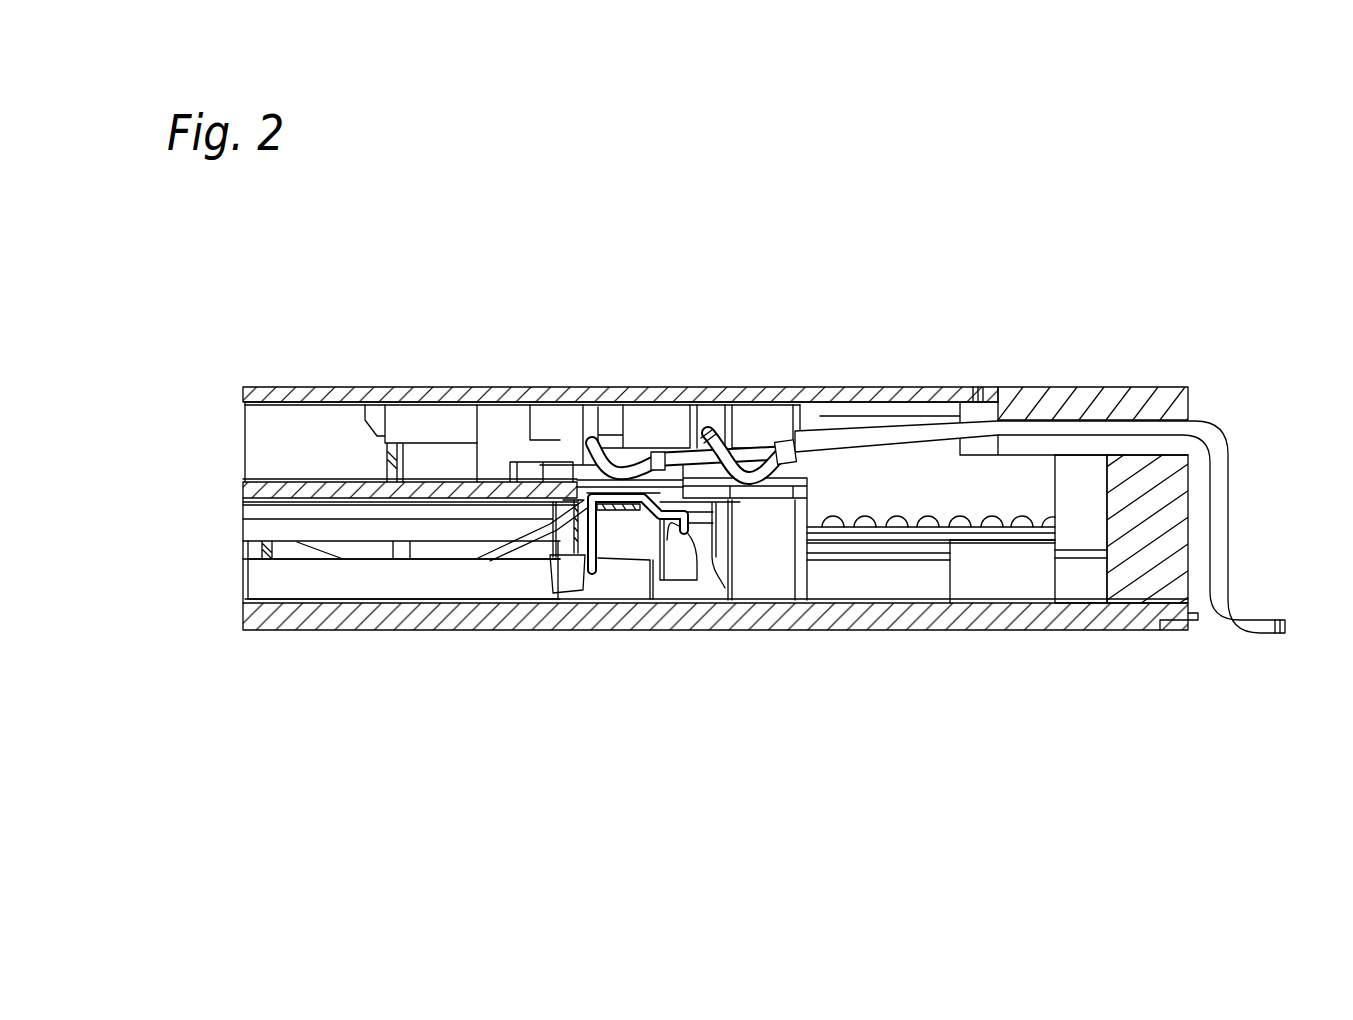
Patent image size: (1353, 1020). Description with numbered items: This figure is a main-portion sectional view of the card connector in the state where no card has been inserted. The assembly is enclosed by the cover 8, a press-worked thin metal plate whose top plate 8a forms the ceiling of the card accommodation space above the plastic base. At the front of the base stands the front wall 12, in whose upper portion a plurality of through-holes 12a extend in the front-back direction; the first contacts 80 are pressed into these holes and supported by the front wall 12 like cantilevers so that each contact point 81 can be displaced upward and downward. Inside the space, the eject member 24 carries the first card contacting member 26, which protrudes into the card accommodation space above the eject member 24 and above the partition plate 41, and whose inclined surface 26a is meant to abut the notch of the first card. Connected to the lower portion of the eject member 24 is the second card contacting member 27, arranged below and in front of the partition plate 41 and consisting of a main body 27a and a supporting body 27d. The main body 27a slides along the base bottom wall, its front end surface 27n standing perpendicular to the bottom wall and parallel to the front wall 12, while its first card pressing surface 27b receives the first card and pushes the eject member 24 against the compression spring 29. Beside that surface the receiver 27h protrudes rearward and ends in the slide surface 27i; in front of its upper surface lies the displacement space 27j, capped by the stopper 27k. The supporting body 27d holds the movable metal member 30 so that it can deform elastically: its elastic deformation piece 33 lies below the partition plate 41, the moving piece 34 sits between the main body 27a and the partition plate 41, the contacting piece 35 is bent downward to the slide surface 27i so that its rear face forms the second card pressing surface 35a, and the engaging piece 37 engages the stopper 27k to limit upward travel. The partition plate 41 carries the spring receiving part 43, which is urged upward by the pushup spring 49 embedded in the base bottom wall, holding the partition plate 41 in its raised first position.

The cover 8 is at (448, 364).
The top plate 8a is at (304, 482).
The front wall 12 is at (1010, 387).
The through-holes 12a is at (1105, 440).
The eject member 24 is at (686, 412).
The first card contacting member 26 is at (411, 418).
The inclined surface 26a is at (510, 420).
The second card contacting member 27 is at (790, 590).
The main body 27a is at (807, 505).
The first card pressing surface 27b is at (665, 585).
The supporting body 27d is at (377, 578).
The receiver 27h is at (632, 580).
The slide surface 27i is at (596, 580).
The displacement space 27j is at (737, 595).
The stopper 27k is at (779, 598).
The front end surface 27n is at (807, 568).
The compression spring 29 is at (1003, 517).
The movable metal member 30 is at (568, 580).
The elastic deformation piece 33 is at (520, 560).
The moving piece 34 is at (572, 512).
The contacting piece 35 is at (605, 536).
The second card pressing surface 35a is at (560, 480).
The engaging piece 37 is at (720, 592).
The partition plate 41 is at (270, 387).
The spring receiving part 43 is at (257, 533).
The pushup spring 49 is at (320, 548).
The first contact 80 is at (824, 433).
The contact point 81 is at (593, 492).